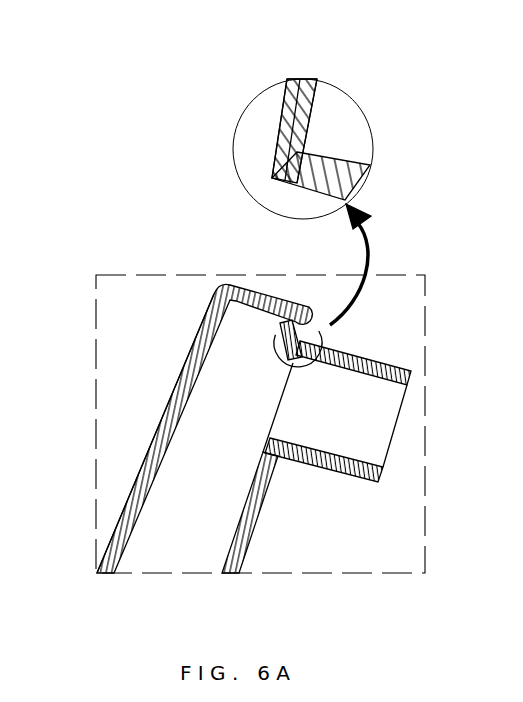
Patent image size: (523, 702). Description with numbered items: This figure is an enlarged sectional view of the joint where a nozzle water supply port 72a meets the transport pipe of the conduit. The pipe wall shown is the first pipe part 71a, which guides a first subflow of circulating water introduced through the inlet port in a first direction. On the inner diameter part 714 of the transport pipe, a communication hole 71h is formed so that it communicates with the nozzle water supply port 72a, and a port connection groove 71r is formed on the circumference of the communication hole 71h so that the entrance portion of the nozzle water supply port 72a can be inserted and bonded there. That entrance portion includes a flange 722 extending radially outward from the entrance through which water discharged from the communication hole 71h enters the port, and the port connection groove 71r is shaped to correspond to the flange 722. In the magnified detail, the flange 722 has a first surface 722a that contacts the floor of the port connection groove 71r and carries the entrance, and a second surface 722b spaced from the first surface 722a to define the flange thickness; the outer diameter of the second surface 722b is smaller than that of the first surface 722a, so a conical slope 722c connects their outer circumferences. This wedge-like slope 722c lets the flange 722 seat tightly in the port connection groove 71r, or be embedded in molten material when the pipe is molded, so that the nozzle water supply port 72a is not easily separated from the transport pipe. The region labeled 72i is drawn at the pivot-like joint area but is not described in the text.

The inner diameter part 714 is at (202, 391).
The first pipe part 71a is at (190, 348).
The communication hole 71h is at (288, 388).
The port connection groove 71r is at (305, 80).
The nozzle water supply port 72a is at (377, 302).
The pivot joint 72i is at (333, 358).
The flange 722 is at (282, 192).
The first surface 722a is at (288, 125).
The second surface 722b is at (318, 138).
The conical slope 722c is at (318, 98).